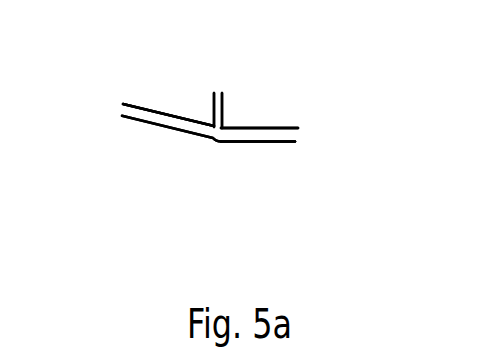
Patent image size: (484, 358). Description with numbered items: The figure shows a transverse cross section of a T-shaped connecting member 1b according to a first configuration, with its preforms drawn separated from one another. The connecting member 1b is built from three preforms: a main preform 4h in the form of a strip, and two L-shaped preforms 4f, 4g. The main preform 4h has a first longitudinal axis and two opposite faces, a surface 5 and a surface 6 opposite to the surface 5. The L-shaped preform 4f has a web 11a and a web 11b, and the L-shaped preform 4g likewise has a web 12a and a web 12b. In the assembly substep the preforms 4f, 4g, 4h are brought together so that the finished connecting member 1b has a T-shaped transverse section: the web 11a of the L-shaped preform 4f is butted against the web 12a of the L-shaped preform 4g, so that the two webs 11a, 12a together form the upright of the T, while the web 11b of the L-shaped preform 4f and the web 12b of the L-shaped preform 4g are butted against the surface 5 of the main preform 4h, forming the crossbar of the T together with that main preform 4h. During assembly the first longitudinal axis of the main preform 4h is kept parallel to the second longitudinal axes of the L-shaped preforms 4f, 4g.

The T-shaped connecting member 1b is at (291, 226).
The L-shaped preform 4f is at (165, 113).
The L-shaped preform 4g is at (255, 127).
The main preform 4h is at (167, 129).
The surface 5 is at (299, 134).
The surface 6 is at (251, 156).
The web 11a is at (204, 100).
The web 11b is at (140, 97).
The web 12a is at (233, 100).
The web 12b is at (292, 117).